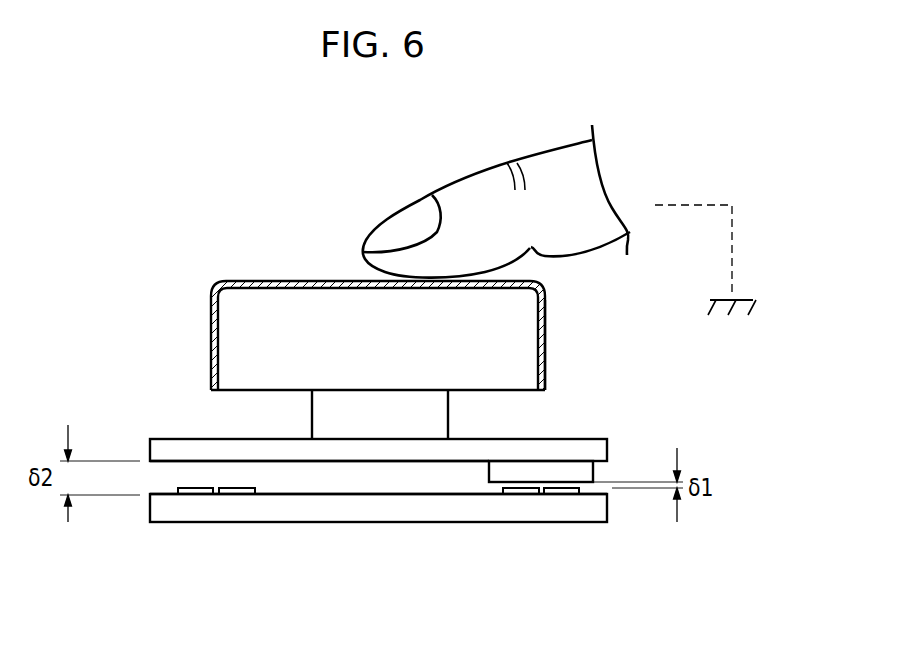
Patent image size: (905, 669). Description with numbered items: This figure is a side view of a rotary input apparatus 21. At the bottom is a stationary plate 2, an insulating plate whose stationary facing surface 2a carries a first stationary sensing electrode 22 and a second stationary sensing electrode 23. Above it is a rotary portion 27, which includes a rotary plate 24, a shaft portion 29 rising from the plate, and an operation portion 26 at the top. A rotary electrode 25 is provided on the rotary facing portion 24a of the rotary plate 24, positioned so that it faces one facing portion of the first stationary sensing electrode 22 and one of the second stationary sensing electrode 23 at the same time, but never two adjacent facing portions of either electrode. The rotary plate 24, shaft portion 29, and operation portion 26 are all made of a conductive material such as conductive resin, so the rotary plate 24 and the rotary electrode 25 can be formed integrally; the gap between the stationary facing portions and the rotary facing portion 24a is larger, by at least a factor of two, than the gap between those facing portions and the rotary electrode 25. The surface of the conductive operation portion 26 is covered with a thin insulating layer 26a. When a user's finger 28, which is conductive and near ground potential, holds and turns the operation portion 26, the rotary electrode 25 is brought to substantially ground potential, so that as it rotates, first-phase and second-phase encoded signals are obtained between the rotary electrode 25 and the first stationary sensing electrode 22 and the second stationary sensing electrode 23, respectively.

The stationary plate 2 is at (600, 534).
The stationary facing surface 2a is at (380, 494).
The rotary input apparatus 21 is at (205, 188).
The first stationary sensing electrode 22 is at (197, 491).
The second stationary sensing electrode 23 is at (238, 491).
The rotary plate 24 is at (573, 447).
The rotary facing portion 24a is at (282, 462).
The rotary electrode 25 is at (592, 473).
The operation portion 26 is at (311, 322).
The thin insulating layer 26a is at (212, 283).
The rotary portion 27 is at (556, 330).
The finger 28 is at (495, 183).
The shaft portion 29 is at (433, 418).